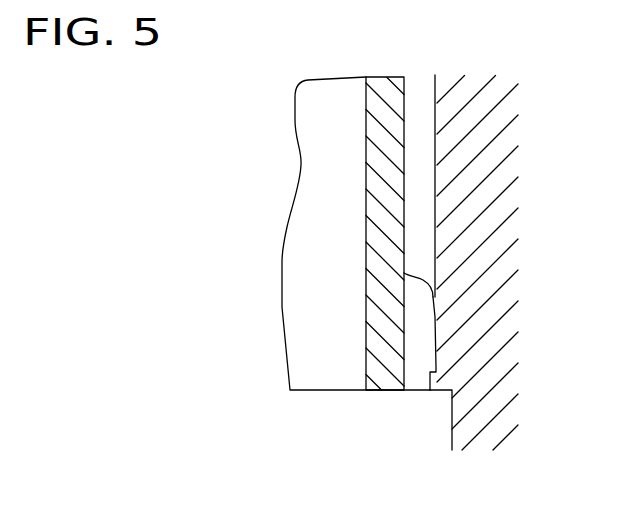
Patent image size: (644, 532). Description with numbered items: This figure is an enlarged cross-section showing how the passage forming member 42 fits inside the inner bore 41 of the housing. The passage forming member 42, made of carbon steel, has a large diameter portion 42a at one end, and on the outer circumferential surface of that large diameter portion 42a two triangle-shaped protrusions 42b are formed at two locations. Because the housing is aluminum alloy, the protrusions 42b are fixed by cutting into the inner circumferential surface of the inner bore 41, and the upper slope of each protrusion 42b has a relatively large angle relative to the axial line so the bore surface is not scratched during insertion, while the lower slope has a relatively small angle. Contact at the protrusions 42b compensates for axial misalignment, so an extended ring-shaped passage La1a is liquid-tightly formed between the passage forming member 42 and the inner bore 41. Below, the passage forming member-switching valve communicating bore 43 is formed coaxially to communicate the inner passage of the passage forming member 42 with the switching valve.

The inner bore 41 is at (435, 132).
The passage forming member 42 is at (364, 152).
The large diameter portion 42a is at (417, 293).
The triangle-shaped protrusions 42b is at (438, 318).
The passage forming member-switching valve communicating bore 43 is at (452, 428).
The extended ring-shaped passage La1a is at (422, 173).